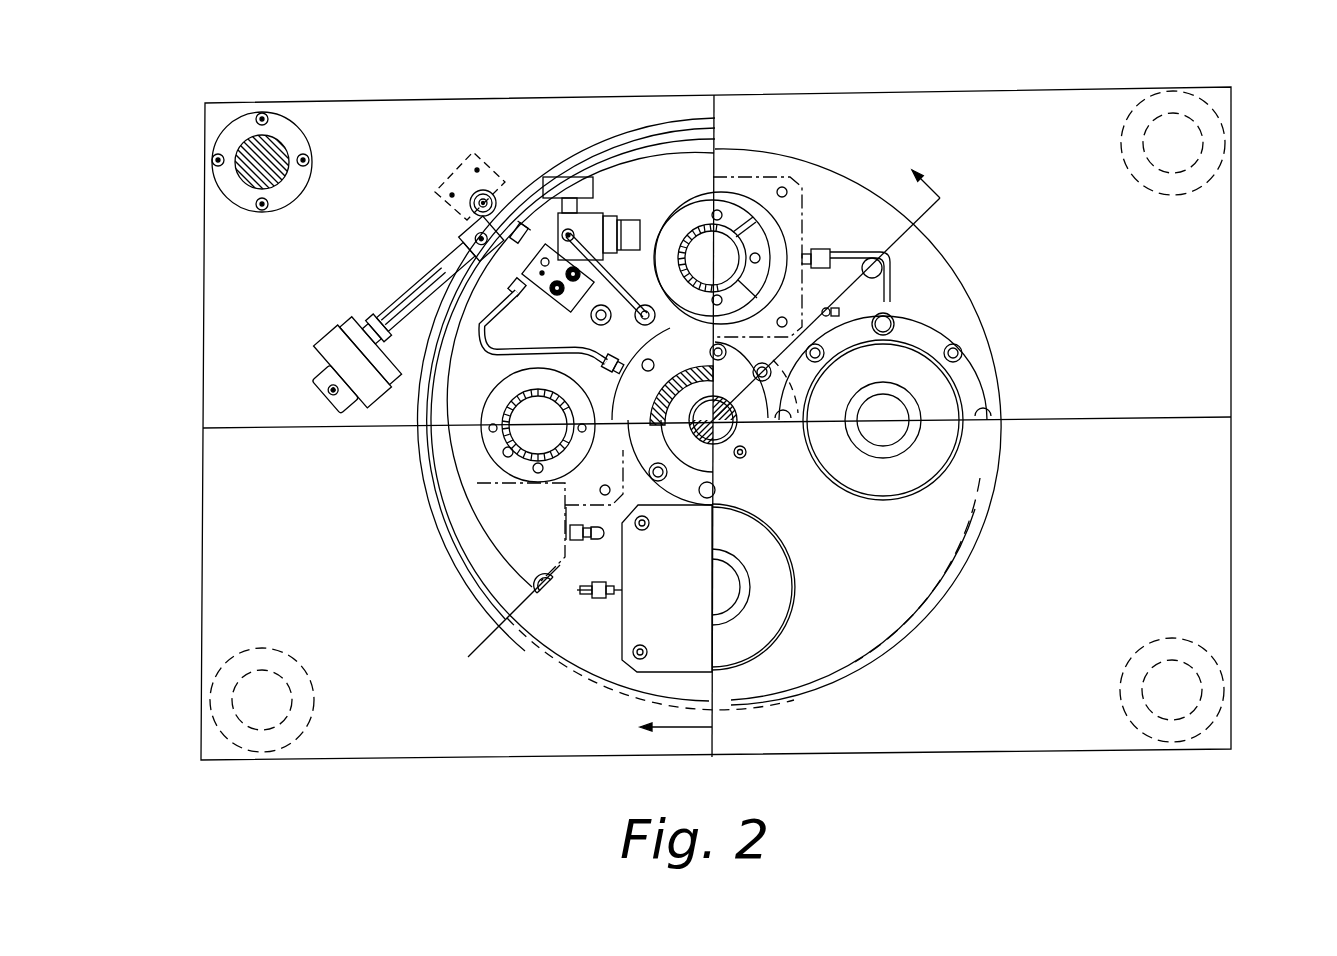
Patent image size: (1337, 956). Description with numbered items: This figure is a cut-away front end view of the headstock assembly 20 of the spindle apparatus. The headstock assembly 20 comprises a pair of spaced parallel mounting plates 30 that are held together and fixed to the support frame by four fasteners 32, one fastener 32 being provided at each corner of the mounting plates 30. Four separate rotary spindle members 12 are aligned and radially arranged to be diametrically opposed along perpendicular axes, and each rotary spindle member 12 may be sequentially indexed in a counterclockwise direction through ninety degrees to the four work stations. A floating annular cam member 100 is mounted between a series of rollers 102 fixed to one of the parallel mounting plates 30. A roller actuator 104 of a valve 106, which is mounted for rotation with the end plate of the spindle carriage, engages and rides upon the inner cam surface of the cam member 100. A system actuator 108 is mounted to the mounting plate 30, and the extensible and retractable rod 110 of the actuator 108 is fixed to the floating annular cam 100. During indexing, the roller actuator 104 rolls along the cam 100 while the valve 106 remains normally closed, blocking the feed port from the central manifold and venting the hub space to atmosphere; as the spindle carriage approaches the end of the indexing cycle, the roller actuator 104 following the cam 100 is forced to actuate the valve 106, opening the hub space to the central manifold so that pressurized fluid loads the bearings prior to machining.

The rotary spindle member 12 is at (743, 207).
The headstock assembly 20 is at (1008, 86).
The mounting plate 30 is at (233, 300).
The fastener 32 is at (247, 152).
The floating annular cam member 100 is at (600, 142).
The roller 102 is at (485, 190).
The roller actuator 104 is at (518, 280).
The valve 106 is at (327, 271).
The system actuator 108 is at (330, 342).
The extensible and retractable rod 110 is at (427, 283).